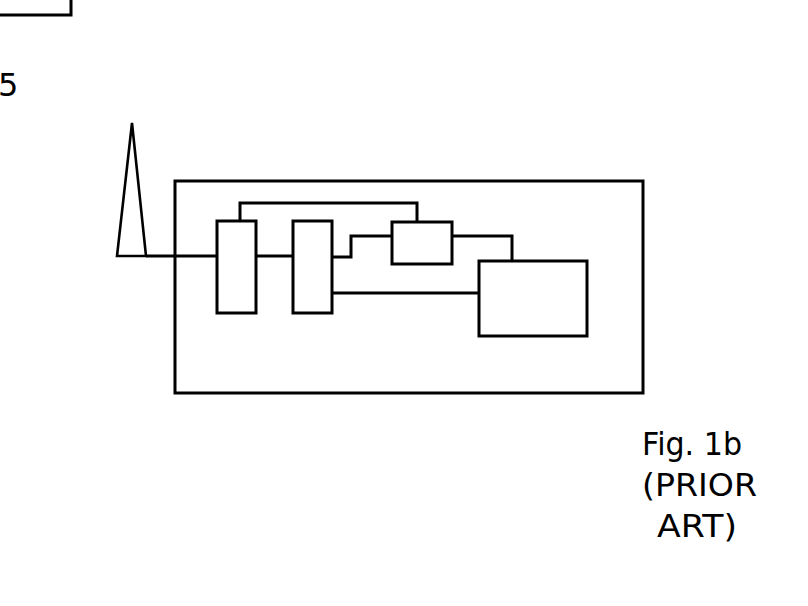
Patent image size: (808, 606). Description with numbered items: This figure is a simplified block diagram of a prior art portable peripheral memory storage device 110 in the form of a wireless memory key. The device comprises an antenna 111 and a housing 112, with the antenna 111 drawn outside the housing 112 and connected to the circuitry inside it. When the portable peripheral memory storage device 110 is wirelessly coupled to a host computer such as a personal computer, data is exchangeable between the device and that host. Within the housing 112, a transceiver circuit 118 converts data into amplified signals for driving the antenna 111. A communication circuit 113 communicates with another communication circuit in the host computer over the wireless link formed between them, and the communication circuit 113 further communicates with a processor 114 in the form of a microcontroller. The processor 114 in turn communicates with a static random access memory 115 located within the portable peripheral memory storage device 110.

The portable peripheral memory storage device 110 is at (394, 265).
The antenna 111 is at (120, 209).
The housing 112 is at (643, 277).
The communication circuit 113 is at (310, 292).
The processor 114 is at (421, 252).
The static random access memory 115 is at (546, 322).
The transceiver circuit 118 is at (233, 292).